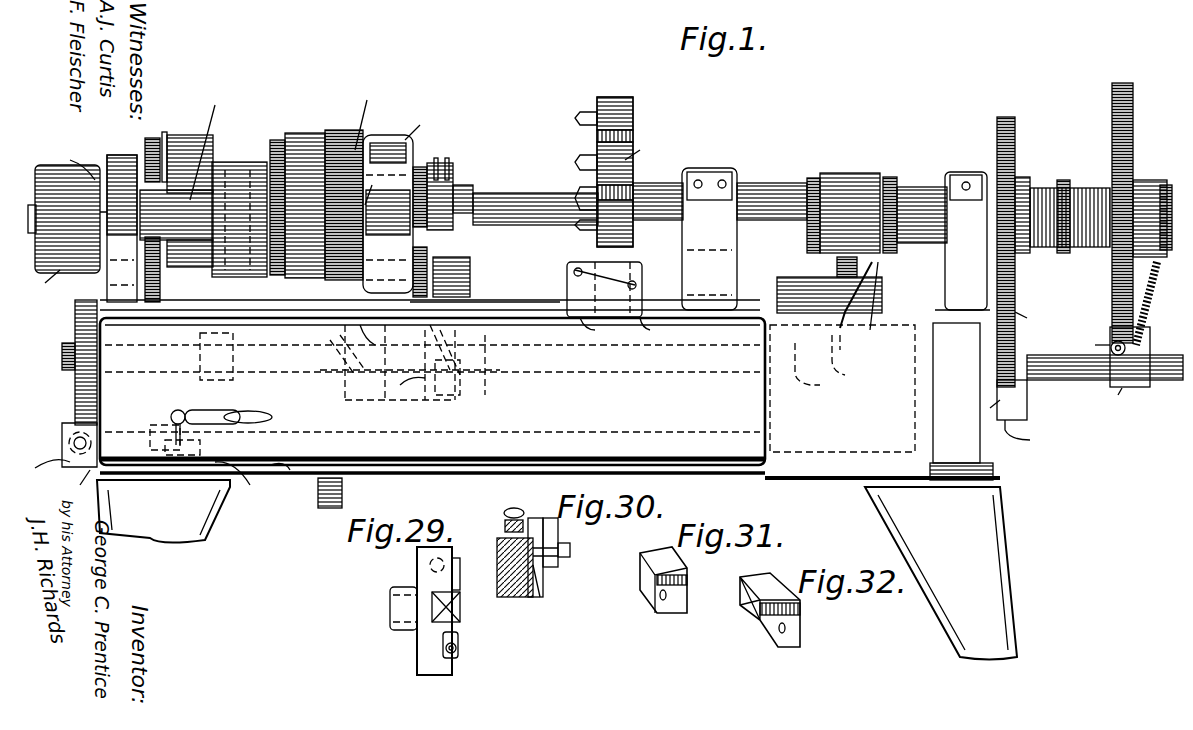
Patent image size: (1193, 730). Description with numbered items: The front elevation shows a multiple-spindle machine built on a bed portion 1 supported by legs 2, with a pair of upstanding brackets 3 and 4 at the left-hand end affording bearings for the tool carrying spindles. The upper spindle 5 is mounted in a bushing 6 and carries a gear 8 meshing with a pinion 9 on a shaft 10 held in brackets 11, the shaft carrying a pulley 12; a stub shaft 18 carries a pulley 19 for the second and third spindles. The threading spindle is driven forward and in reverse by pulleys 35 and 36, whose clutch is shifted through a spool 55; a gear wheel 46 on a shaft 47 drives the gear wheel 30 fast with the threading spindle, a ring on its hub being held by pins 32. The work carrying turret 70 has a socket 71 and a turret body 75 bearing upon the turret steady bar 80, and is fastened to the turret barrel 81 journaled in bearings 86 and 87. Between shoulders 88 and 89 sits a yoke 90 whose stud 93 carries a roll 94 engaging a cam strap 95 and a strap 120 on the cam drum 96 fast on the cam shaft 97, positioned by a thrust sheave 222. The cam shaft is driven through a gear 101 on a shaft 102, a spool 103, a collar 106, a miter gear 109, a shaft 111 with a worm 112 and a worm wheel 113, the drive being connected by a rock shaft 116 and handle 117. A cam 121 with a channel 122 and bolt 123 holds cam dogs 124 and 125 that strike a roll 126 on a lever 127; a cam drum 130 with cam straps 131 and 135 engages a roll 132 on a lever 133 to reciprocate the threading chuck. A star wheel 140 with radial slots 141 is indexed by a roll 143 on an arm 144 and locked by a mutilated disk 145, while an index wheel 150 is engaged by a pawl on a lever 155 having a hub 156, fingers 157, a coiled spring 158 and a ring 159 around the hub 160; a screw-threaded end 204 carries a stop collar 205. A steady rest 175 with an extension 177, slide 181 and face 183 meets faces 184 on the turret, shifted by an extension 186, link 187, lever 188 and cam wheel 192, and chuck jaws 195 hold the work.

In FIG. 1, the bed portion 1 is at (550, 389).
In FIG. 1, the legs 2 is at (557, 570).
In FIG. 1, the upstanding bracket 3 is at (122, 155).
In FIG. 1, the upstanding bracket 4 is at (378, 145).
In FIG. 1, the upper spindle 5 is at (470, 190).
In FIG. 1, the bushing 6 is at (422, 178).
In FIG. 1, the gear 8 is at (335, 150).
In FIG. 1, the pinion 9 is at (376, 185).
In FIG. 1, the shaft 10 is at (209, 144).
In FIG. 1, the brackets 11 is at (395, 268).
In FIG. 1, the pulley 12 is at (228, 165).
In FIG. 1, the stub shaft 18 is at (33, 205).
In FIG. 1, the pulley 19 is at (45, 284).
In FIG. 1, the gear wheel 30 is at (369, 116).
In FIG. 1, the pins 32 is at (452, 175).
In FIG. 1, the forward driving pulley 35 is at (185, 150).
In FIG. 1, the reversing pulley 36 is at (298, 155).
In FIG. 1, the gear wheel 46 is at (152, 138).
In FIG. 1, the shaft 47 is at (277, 140).
In FIG. 1, the spool 55 is at (252, 165).
In FIG. 1, the work carrying turret 70 is at (633, 112).
In FIG. 1, the socket 71 is at (421, 123).
In FIG. 1, the turret body 75 is at (647, 153).
In FIG. 1, the turret steady bar 80 is at (530, 200).
In FIG. 1, the turret barrel 81 is at (770, 200).
In FIG. 1, the bearing 86 is at (709, 239).
In FIG. 1, the bearing 87 is at (960, 240).
In FIG. 1, the shoulder 88 is at (813, 180).
In FIG. 1, the shoulder 89 is at (890, 180).
In FIG. 1, the yoke 90 is at (850, 190).
In FIG. 1, the stud 93 is at (875, 268).
In FIG. 1, the roll 94 is at (837, 268).
In FIG. 1, the cam strap 95 is at (842, 348).
In FIG. 1, the cam drum 96 is at (790, 295).
In FIG. 1, the cam shaft 97 is at (1093, 378).
In FIG. 1, the gear 101 is at (342, 495).
In FIG. 1, the shaft 102 is at (285, 475).
In FIG. 1, the spool 103 is at (240, 490).
In FIG. 1, the collar 106 is at (160, 440).
In FIG. 1, the miter gear 109 is at (73, 484).
In FIG. 1, the shaft 111 is at (70, 440).
In FIG. 1, the worm 112 is at (44, 473).
In FIG. 1, the worm wheel 113 is at (72, 345).
In FIG. 1, the rock shaft 116 is at (175, 415).
In FIG. 1, the handle 117 is at (200, 410).
In FIG. 1, the strap 120 is at (812, 392).
In FIG. 1, the cam 121 is at (210, 358).
In FIG. 29, the cam 121 is at (417, 660).
In FIG. 30, the cam 121 is at (545, 595).
In FIG. 30, the channel 122 is at (533, 578).
In FIG. 30, the bolt 123 is at (570, 551).
In FIG. 29, the cam dog 124 is at (460, 600).
In FIG. 30, the cam dog 124 is at (558, 533).
In FIG. 31, the cam dog 124 is at (660, 595).
In FIG. 29, the cam dog 125 is at (458, 625).
In FIG. 32, the cam dog 125 is at (752, 600).
In FIG. 30, the roll 126 is at (503, 525).
In FIG. 1, the lever 127 is at (265, 405).
In FIG. 30, the lever 127 is at (530, 499).
In FIG. 1, the cam drum 130 is at (478, 395).
In FIG. 1, the cam strap 131 is at (490, 355).
In FIG. 1, the roll 132 is at (448, 398).
In FIG. 1, the lever 133 is at (388, 336).
In FIG. 1, the cam strap 135 is at (410, 400).
In FIG. 1, the star wheel 140 is at (1015, 152).
In FIG. 1, the radial slots 141 is at (1039, 315).
In FIG. 1, the roll 143 is at (1040, 438).
In FIG. 1, the arm 144 is at (1027, 420).
In FIG. 1, the mutilated disk 145 is at (967, 413).
In FIG. 1, the index wheel 150 is at (1128, 130).
In FIG. 1, the lever 155 is at (1135, 338).
In FIG. 1, the hub 156 is at (1130, 402).
In FIG. 1, the fingers 157 is at (1084, 338).
In FIG. 1, the coiled spring 158 is at (1150, 300).
In FIG. 1, the ring 159 is at (1166, 190).
In FIG. 1, the hub 160 is at (1145, 185).
In FIG. 1, the steady rest 175 is at (567, 275).
In FIG. 1, the extension 177 is at (646, 334).
In FIG. 1, the slide 181 is at (636, 280).
In FIG. 1, the face 183 is at (578, 262).
In FIG. 1, the faces 184 is at (633, 136).
In FIG. 1, the extension 186 is at (590, 334).
In FIG. 1, the link 187 is at (500, 302).
In FIG. 1, the lever 188 is at (416, 350).
In FIG. 1, the cam wheel 192 is at (365, 367).
In FIG. 1, the jaws 195 is at (575, 140).
In FIG. 1, the screw-threaded end 204 is at (1052, 245).
In FIG. 1, the collar 205 is at (1066, 185).
In FIG. 1, the thrust sheave 222 is at (888, 303).